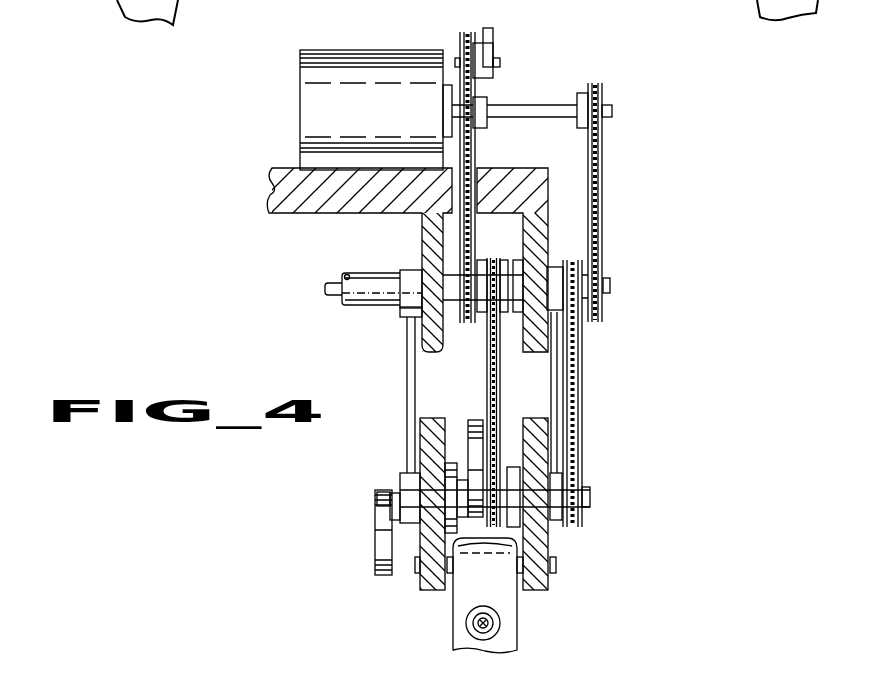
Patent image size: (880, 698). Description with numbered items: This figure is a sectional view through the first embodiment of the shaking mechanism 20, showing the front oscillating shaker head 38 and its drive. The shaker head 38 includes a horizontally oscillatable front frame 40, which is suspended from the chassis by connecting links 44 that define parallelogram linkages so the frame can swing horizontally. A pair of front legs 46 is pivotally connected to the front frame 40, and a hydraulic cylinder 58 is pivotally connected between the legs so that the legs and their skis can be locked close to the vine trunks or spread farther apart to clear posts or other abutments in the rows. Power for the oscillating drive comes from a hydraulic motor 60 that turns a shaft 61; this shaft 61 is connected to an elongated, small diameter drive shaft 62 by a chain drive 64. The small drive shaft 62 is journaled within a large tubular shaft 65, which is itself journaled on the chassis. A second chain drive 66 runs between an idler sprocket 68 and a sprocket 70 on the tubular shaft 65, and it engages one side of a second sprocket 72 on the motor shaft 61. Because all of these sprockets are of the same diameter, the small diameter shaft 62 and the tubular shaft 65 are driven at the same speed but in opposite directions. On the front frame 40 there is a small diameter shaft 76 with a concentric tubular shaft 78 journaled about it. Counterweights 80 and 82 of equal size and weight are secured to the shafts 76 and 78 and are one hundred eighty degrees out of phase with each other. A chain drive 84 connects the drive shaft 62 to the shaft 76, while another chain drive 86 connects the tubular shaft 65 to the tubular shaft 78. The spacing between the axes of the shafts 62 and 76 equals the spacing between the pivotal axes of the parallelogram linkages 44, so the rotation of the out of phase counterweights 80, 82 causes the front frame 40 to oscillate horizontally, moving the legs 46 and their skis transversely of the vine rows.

The shaking mechanism 20 is at (287, 128).
The front oscillating shaker head 38 is at (640, 329).
The front frame 40 is at (427, 583).
The connecting links 44 is at (405, 335).
The front legs 46 is at (453, 618).
The hydraulic cylinder 58 is at (500, 625).
The hydraulic motor 60 is at (300, 69).
The shaft 61 is at (547, 103).
The drive shaft 62 is at (325, 290).
The chain drive 64 is at (604, 162).
The tubular shaft 65 is at (370, 272).
The second chain drive 66 is at (477, 152).
The idler sprocket 68 is at (458, 55).
The sprocket 70 is at (484, 270).
The second sprocket 72 is at (452, 113).
The small diameter shaft 76 is at (590, 497).
The tubular shaft 78 is at (378, 497).
The counterweight 80 is at (375, 533).
The counterweight 82 is at (475, 420).
The chain drive 84 is at (580, 405).
The chain drive 86 is at (500, 350).